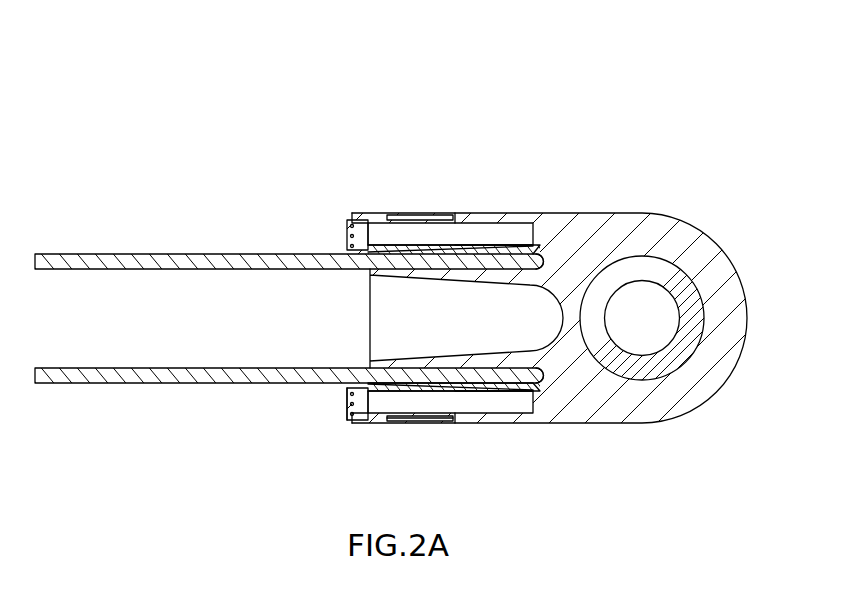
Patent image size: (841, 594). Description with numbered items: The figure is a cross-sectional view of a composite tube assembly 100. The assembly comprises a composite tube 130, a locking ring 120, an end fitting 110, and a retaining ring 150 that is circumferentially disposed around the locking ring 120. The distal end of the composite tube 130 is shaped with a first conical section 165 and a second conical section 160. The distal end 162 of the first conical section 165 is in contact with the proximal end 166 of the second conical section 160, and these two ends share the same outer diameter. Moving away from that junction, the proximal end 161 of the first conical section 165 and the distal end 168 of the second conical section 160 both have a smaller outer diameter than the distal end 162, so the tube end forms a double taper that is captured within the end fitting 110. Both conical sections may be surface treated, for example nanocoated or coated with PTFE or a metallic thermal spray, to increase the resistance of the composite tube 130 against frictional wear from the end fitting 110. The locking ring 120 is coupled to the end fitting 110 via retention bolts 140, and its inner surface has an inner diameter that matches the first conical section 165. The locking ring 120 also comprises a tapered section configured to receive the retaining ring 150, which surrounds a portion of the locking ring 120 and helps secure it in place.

The composite tube assembly 100 is at (492, 61).
The end fitting 110 is at (613, 221).
The locking ring 120 is at (375, 219).
The composite tube 130 is at (148, 378).
The retention bolts 140 is at (345, 222).
The retaining ring 150 is at (415, 216).
The second conical section 160 is at (514, 243).
The proximal end of the first conical section 161 is at (352, 392).
The distal end of the first conical section 162 is at (440, 419).
The first conical section 165 is at (427, 248).
The proximal end of the second conical section 166 is at (462, 384).
The distal end of the second conical section 168 is at (538, 384).